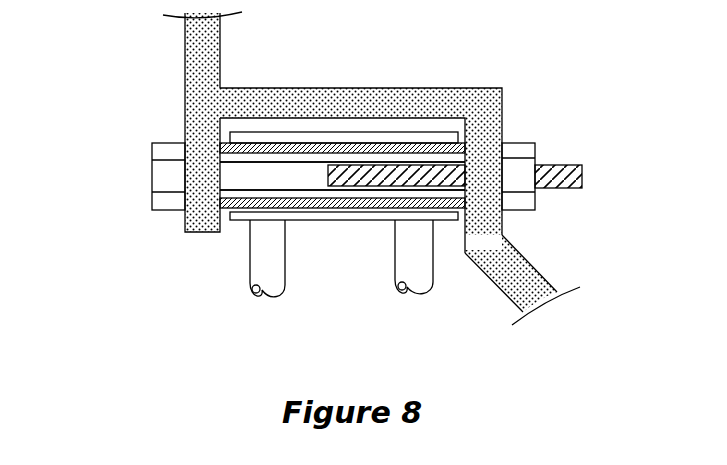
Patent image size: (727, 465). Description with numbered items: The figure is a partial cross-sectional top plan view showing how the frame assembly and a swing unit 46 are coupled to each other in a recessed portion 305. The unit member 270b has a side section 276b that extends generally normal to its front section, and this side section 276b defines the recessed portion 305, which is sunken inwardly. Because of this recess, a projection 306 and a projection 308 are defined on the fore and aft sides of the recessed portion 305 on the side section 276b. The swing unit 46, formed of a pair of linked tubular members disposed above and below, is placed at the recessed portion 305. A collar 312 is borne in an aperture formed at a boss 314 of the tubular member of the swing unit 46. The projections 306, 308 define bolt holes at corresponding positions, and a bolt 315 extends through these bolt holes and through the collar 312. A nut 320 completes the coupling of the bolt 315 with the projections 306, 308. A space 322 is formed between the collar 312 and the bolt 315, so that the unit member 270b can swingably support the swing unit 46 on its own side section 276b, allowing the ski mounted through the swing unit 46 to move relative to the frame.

The unit member 270b is at (185, 65).
The side section 276b is at (396, 92).
The projection 308 is at (505, 233).
The recessed portion 305 is at (450, 126).
The bolt 315 is at (352, 165).
The collar 312 is at (298, 160).
The space 322 is at (378, 196).
The projection 306 is at (185, 222).
The nut 320 is at (512, 142).
The boss 314 is at (340, 222).
The swing unit 46 is at (397, 268).